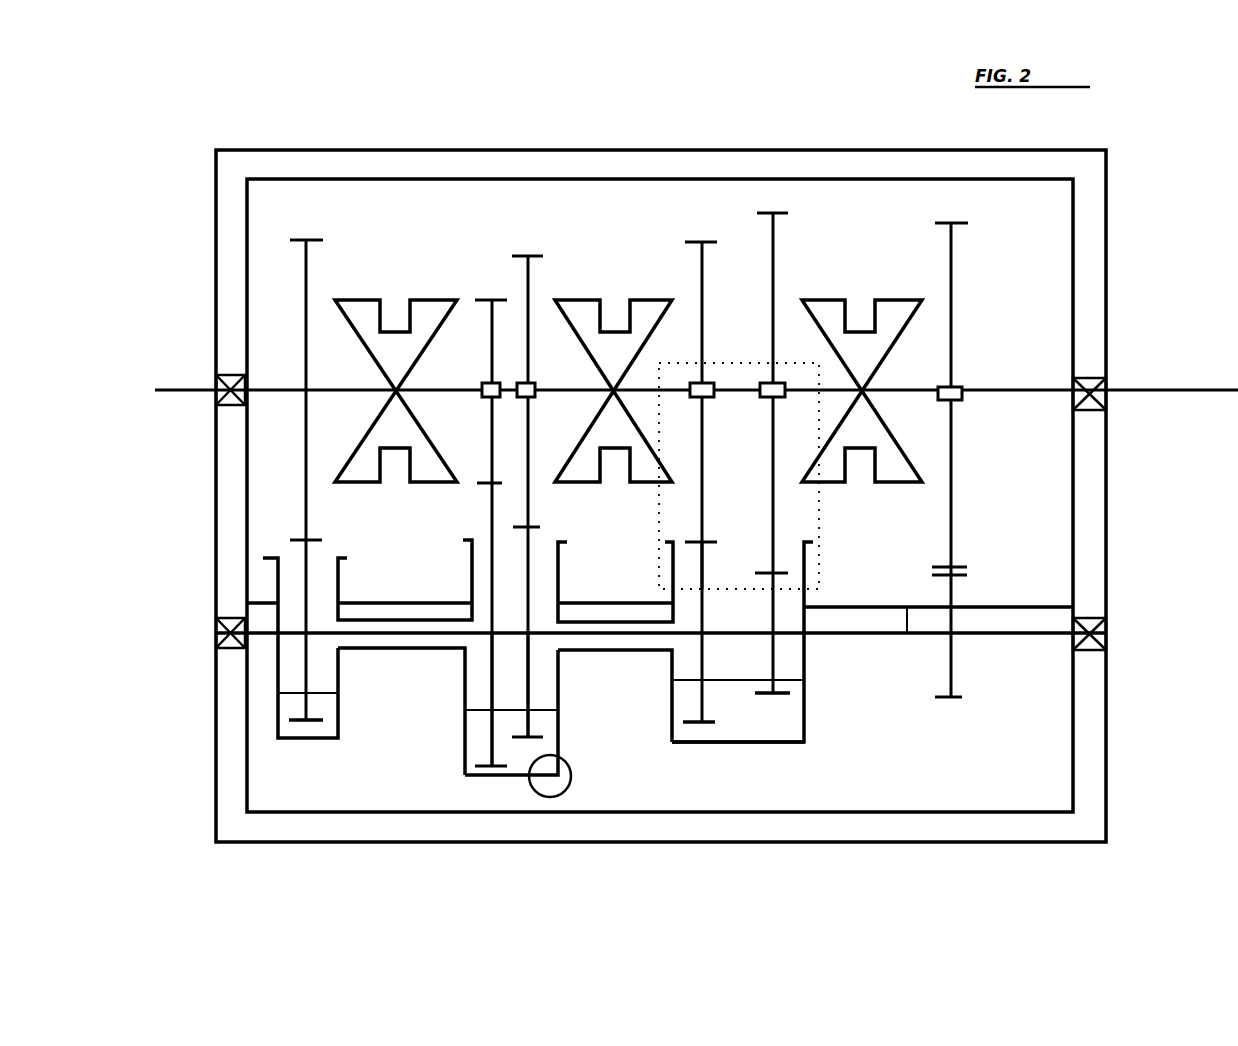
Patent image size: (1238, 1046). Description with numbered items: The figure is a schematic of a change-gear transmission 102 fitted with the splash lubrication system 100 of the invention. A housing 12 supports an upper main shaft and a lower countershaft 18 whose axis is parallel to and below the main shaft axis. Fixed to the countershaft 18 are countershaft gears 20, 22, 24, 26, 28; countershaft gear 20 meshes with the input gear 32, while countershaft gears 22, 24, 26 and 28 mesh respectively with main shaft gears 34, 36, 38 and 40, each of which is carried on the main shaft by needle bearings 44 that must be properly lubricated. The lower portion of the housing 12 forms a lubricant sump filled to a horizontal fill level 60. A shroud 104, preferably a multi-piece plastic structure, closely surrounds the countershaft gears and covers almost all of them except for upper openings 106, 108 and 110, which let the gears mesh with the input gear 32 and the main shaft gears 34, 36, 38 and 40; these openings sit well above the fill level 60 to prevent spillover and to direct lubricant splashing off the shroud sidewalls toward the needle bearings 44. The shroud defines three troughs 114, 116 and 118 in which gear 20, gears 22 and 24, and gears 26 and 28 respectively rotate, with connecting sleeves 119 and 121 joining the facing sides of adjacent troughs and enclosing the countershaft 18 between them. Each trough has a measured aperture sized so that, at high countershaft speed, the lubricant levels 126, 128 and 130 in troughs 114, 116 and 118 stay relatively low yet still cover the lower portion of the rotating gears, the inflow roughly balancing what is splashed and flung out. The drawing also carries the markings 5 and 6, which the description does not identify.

The transmission 102 is at (604, 122).
The housing 12 is at (1090, 281).
The lubrication system 100 is at (1016, 572).
The countershaft 18 is at (997, 638).
The input gear 32 is at (307, 303).
The main shaft gear 34 is at (488, 497).
The main shaft gear 36 is at (532, 485).
The main shaft gear 38 is at (697, 507).
The main shaft gear 40 is at (776, 500).
The needle bearings 44 is at (767, 383).
The coupling unit 6 is at (824, 528).
The upper opening 110 is at (730, 545).
The upper opening 106 is at (317, 558).
The upper opening 108 is at (508, 538).
The shroud 104 is at (806, 650).
The fill level 60 is at (907, 637).
The trough 114 is at (308, 740).
The sump level 126 is at (315, 690).
The countershaft gear 20 is at (328, 686).
The connecting sleeve 119 is at (413, 650).
The trough 116 is at (485, 776).
The sump level 128 is at (513, 707).
The countershaft gear 22 is at (487, 663).
The countershaft gear 24 is at (529, 663).
The connecting sleeve 121 is at (647, 652).
The motor 5 is at (576, 776).
The countershaft gear 26 is at (690, 667).
The sump level 130 is at (735, 686).
The countershaft gear 28 is at (775, 665).
The trough 118 is at (717, 742).